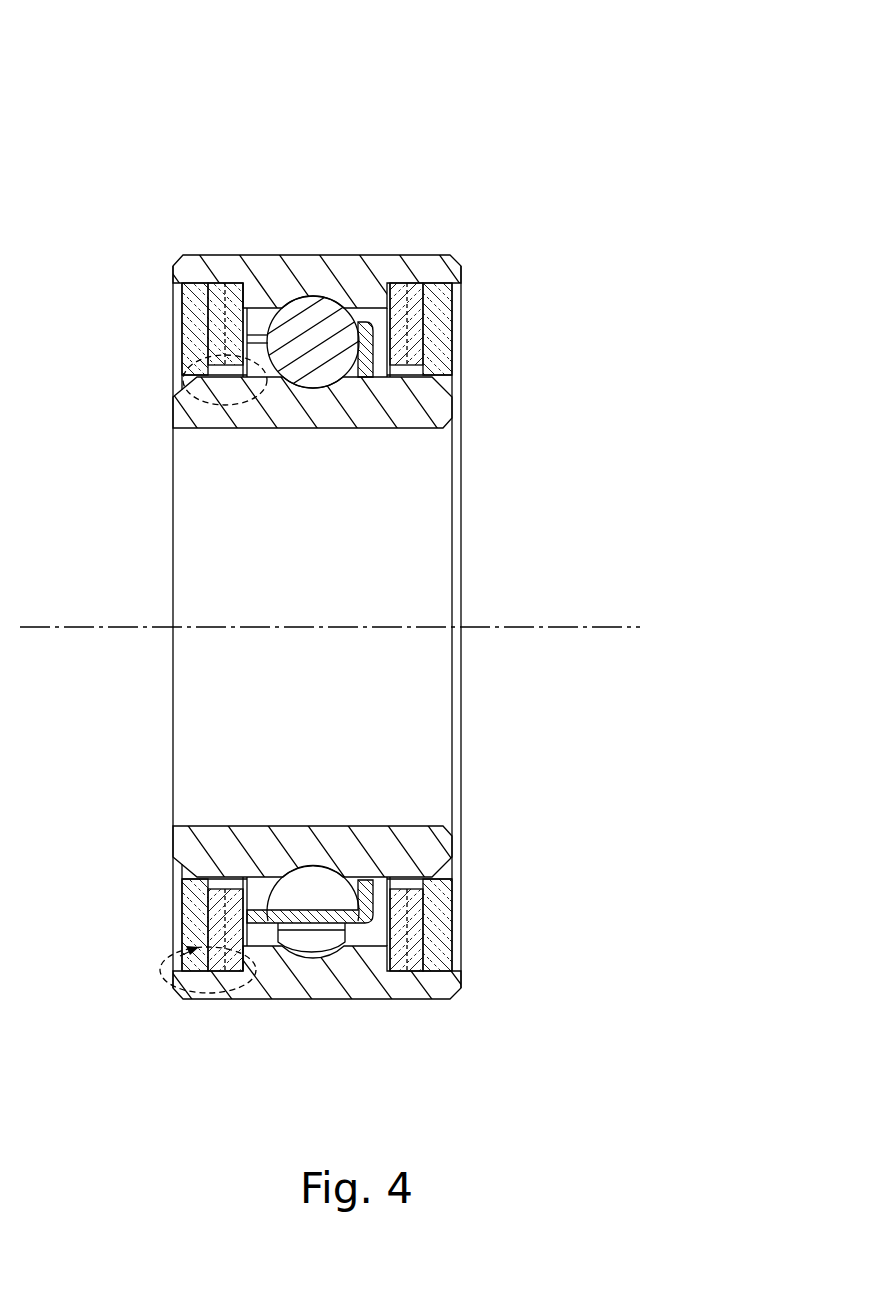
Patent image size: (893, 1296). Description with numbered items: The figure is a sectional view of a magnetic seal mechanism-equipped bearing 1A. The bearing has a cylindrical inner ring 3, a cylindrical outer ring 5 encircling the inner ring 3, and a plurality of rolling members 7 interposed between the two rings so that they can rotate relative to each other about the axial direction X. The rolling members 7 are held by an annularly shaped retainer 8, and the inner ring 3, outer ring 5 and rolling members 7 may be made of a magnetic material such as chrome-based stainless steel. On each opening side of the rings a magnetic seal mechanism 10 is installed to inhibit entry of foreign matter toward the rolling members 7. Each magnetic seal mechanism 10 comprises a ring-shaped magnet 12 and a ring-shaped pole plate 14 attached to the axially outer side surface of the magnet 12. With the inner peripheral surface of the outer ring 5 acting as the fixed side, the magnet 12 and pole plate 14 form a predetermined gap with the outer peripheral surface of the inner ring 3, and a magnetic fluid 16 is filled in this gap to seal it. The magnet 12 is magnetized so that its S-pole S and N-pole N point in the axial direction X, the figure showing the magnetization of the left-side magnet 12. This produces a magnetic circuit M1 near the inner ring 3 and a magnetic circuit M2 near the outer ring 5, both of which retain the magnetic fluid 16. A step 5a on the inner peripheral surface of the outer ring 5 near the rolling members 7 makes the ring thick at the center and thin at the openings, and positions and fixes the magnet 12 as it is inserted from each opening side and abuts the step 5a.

The magnetic seal mechanism-equipped bearing 1A is at (380, 122).
The inner ring 3 is at (433, 407).
The outer ring 5 is at (353, 275).
The step 5a is at (262, 292).
The rolling members 7 is at (315, 320).
The retainer 8 is at (300, 932).
The magnetic seal mechanism 10 is at (321, 556).
The magnet 12 is at (428, 303).
The pole plate 14 is at (204, 356).
The magnetic fluid 16 is at (187, 877).
The N-pole N is at (230, 290).
The S-pole S is at (212, 306).
The magnetic circuit M1 is at (241, 405).
The magnetic circuit M2 is at (160, 968).
The axial direction X is at (346, 631).